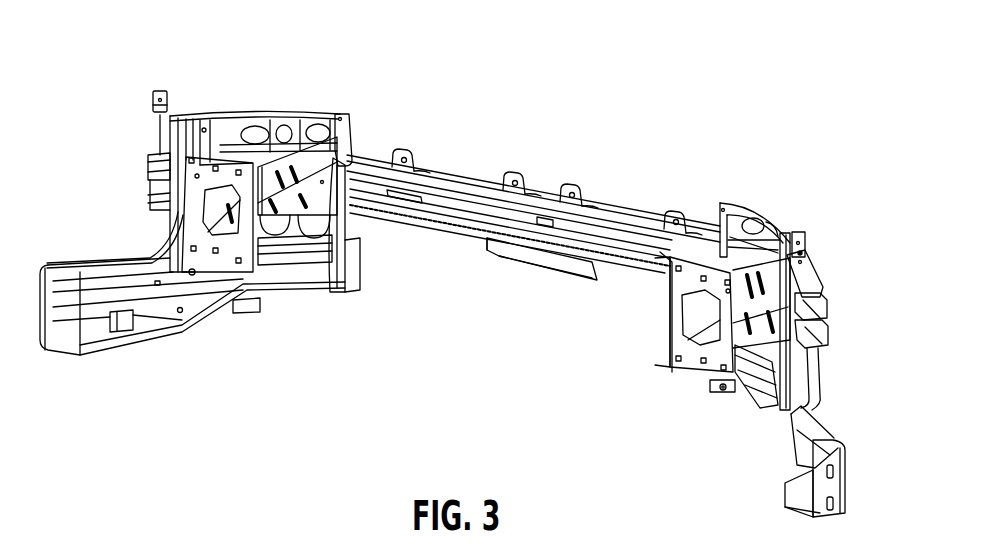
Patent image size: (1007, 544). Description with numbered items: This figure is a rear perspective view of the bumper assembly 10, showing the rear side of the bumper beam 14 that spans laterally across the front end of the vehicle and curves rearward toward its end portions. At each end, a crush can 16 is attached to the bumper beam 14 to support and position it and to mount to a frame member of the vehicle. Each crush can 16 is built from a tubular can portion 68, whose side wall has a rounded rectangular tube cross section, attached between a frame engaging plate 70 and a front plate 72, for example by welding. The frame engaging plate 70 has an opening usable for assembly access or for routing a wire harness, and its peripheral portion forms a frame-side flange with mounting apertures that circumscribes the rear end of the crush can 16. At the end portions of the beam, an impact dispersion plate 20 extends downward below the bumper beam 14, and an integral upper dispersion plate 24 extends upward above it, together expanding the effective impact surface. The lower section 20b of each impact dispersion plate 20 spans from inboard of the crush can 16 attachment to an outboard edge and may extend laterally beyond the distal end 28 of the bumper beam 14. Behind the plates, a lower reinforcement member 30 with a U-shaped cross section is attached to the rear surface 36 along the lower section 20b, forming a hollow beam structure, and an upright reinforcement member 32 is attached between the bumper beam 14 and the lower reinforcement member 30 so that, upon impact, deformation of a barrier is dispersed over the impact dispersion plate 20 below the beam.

The bumper assembly 10 is at (128, 68).
The bumper beam 14 is at (461, 165).
The crush can 16 is at (338, 135).
The impact dispersion plate 20 is at (192, 345).
The lower section 20b is at (366, 297).
The upper dispersion plate 24 is at (311, 96).
The distal end 28 is at (151, 158).
The lower reinforcement member 30 is at (297, 270).
The upright reinforcement member 32 is at (181, 228).
The rear surface 36 is at (331, 244).
The tubular can portion 68 is at (313, 147).
The frame engaging plate 70 is at (207, 160).
The front plate 72 is at (777, 284).